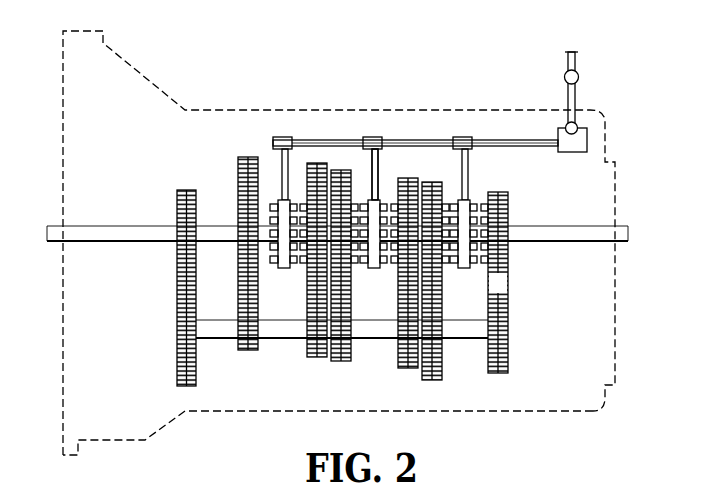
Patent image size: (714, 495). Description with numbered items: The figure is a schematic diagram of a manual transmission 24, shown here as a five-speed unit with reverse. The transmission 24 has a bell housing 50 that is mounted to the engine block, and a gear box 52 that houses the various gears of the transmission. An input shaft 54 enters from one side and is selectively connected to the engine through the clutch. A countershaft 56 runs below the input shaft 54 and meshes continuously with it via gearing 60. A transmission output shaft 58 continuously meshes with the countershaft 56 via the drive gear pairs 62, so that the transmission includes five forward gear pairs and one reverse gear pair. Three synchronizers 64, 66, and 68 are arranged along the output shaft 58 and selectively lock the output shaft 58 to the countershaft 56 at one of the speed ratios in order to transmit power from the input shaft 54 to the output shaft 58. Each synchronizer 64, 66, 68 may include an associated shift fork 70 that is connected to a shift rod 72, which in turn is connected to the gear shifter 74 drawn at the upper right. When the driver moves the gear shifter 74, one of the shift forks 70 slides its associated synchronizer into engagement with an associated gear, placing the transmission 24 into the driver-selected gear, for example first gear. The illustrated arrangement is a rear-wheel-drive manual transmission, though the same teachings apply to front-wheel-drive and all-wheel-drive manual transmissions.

The transmission 24 is at (368, 112).
The bell housing 50 is at (134, 56).
The gear box 52 is at (530, 412).
The input shaft 54 is at (55, 226).
The countershaft 56 is at (220, 338).
The transmission output shaft 58 is at (620, 226).
The gearing 60 is at (170, 284).
The drive gear pairs 62 is at (222, 248).
The synchronizer 64 is at (272, 200).
The synchronizer 66 is at (366, 200).
The synchronizer 68 is at (470, 200).
The shift fork 70 is at (378, 172).
The shift rod 72 is at (520, 140).
The gear shifter 74 is at (576, 62).